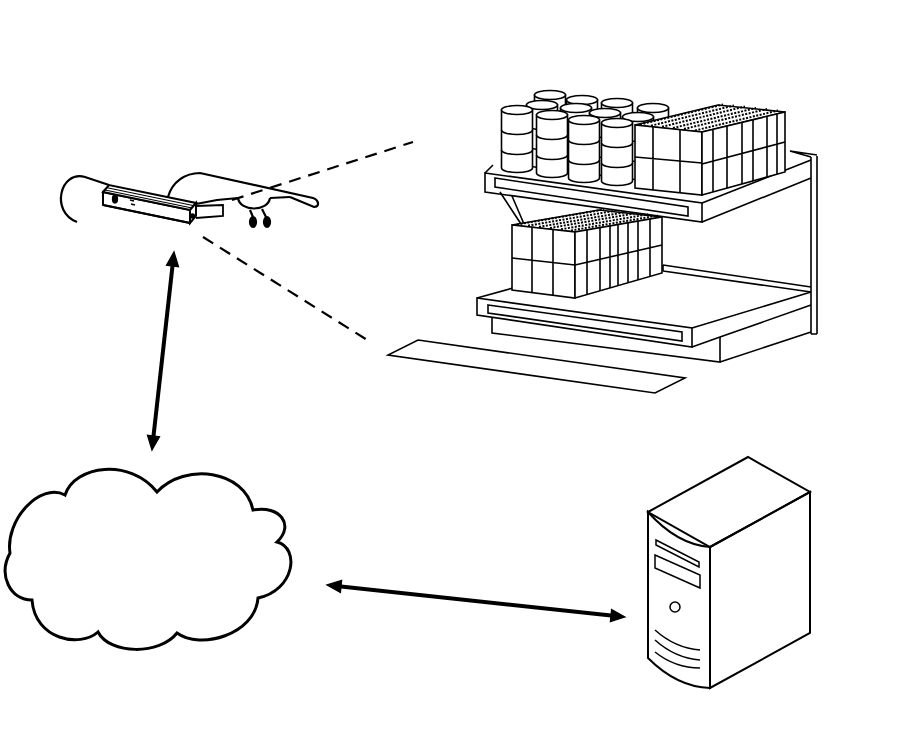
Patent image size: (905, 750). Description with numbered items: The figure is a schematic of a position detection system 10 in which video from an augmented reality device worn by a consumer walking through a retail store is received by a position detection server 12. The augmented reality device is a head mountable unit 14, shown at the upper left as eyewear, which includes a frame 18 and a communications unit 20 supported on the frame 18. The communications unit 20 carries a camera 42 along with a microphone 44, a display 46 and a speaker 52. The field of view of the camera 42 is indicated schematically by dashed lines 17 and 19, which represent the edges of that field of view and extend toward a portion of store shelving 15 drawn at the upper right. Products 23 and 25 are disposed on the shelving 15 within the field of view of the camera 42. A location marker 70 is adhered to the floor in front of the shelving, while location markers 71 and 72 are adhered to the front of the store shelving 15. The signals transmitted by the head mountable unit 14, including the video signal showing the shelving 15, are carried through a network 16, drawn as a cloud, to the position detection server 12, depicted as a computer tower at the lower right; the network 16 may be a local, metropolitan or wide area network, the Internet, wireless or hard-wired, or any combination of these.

The position detection system 10 is at (468, 42).
The position detection server 12 is at (775, 655).
The head mountable unit 14 is at (148, 92).
The store shelving 15 is at (783, 347).
The network 16 is at (135, 650).
The dashed line 17 is at (323, 167).
The frame 18 is at (196, 148).
The dashed line 19 is at (293, 292).
The communications unit 20 is at (160, 233).
The product 23 is at (512, 248).
The product 25 is at (688, 142).
The camera 42 is at (195, 223).
The microphone 44 is at (132, 208).
The display 46 is at (217, 219).
The speaker 52 is at (114, 207).
The location marker 70 is at (673, 388).
The location marker 71 is at (675, 325).
The location marker 72 is at (687, 222).